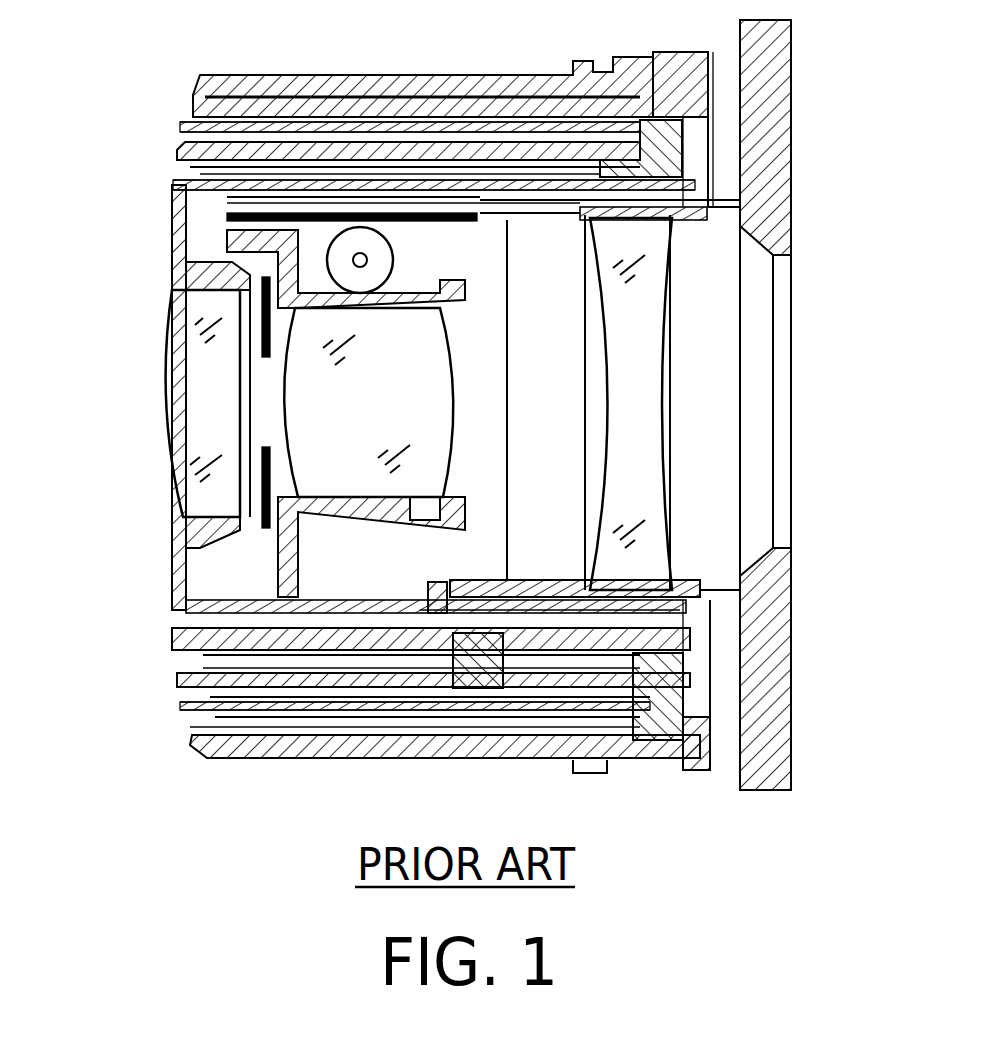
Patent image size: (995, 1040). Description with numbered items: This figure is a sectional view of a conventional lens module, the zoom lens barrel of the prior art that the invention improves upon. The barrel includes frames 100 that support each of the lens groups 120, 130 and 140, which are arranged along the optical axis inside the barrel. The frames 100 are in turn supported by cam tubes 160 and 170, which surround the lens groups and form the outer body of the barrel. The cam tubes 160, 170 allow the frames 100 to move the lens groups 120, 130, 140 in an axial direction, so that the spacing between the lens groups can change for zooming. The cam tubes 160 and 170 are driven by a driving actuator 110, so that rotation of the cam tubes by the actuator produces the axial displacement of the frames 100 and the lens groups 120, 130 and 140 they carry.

The frame 100 is at (640, 218).
The driving actuator 110 is at (327, 262).
The lens group 120 is at (190, 466).
The lens group 130 is at (305, 385).
The lens group 140 is at (640, 463).
The cam tube 160 is at (205, 660).
The cam tube 170 is at (180, 683).